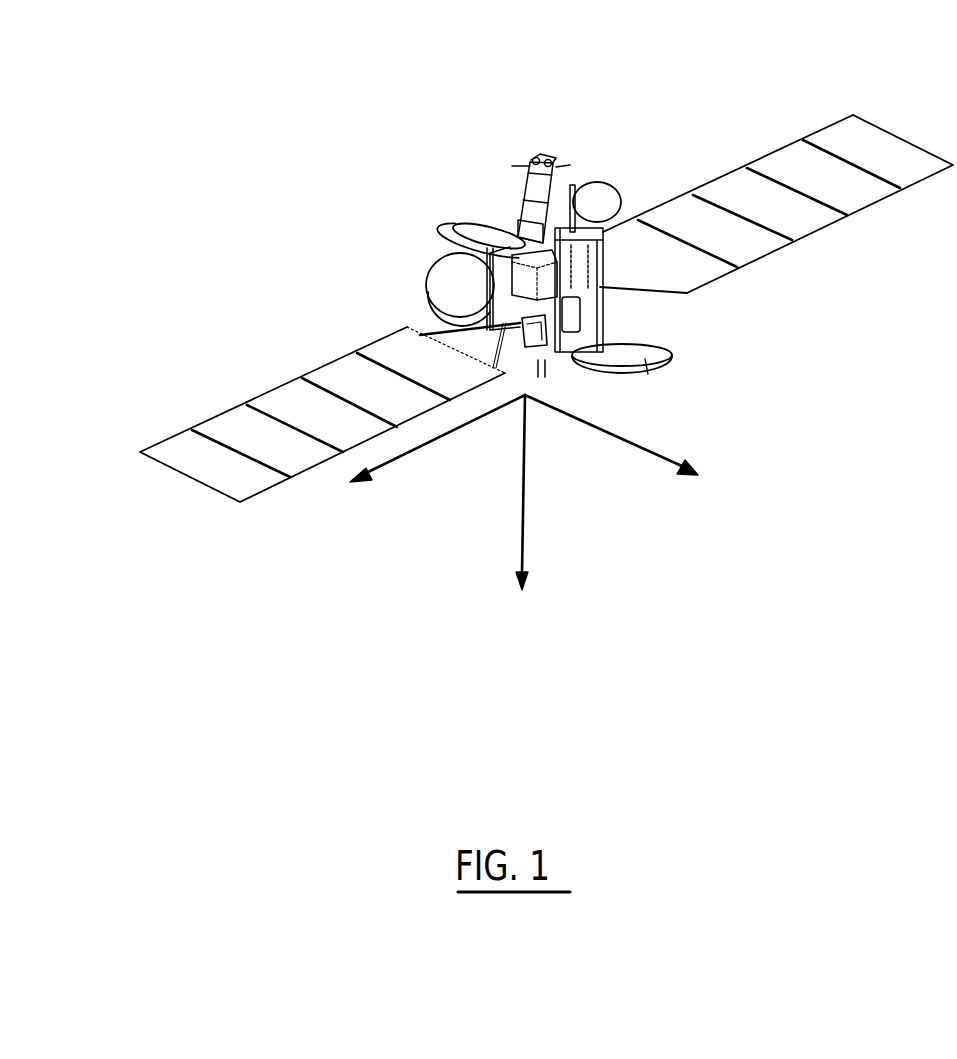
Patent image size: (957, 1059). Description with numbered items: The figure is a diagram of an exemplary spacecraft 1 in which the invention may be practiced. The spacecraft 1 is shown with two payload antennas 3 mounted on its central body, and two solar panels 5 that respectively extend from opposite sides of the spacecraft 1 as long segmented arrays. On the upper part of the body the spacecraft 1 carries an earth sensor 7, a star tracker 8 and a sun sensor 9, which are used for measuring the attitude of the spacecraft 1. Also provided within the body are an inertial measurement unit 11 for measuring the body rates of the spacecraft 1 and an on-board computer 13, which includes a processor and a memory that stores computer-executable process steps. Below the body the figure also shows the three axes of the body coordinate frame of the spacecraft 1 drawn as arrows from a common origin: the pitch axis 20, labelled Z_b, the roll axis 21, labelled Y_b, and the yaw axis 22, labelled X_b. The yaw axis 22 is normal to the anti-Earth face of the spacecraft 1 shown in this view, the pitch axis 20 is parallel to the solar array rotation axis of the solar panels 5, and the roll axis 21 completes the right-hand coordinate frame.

The spacecraft 1 is at (504, 62).
The payload antennas 3 is at (417, 268).
The solar panels 5 is at (866, 222).
The earth sensor 7 is at (541, 159).
The star tracker 8 is at (528, 168).
The sun sensor 9 is at (566, 168).
The inertial measurement unit 11 is at (545, 265).
The on-board computer 13 is at (540, 345).
The pitch axis 20 is at (411, 470).
The roll axis 21 is at (691, 442).
The yaw axis 22 is at (605, 496).